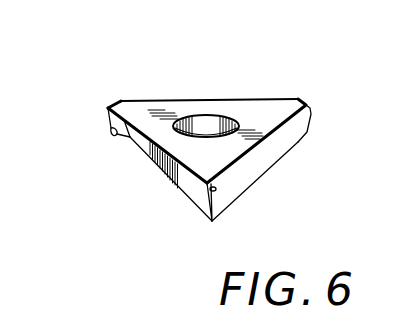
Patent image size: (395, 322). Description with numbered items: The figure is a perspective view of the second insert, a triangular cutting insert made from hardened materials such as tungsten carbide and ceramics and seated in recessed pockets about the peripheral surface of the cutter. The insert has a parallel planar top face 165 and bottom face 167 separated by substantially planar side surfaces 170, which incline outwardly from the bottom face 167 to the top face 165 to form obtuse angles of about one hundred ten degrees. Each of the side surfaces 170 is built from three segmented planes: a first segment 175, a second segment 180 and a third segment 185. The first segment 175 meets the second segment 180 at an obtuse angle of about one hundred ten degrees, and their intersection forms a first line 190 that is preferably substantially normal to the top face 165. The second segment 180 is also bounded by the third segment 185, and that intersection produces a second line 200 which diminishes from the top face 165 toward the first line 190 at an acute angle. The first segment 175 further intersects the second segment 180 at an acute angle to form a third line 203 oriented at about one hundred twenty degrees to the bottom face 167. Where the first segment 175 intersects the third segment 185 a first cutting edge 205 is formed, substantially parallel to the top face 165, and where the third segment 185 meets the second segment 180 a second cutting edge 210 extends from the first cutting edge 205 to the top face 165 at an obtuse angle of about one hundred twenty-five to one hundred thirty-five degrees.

The top face 165 is at (172, 104).
The bottom face 167 is at (284, 156).
The side surfaces 170 is at (307, 108).
The first segment 175 is at (110, 129).
The second segment 180 is at (200, 98).
The third segment 185 is at (139, 100).
The first line 190 is at (113, 146).
The second line 200 is at (130, 138).
The third line 203 is at (107, 117).
The first cutting edge 205 is at (108, 108).
The second cutting edge 210 is at (110, 103).